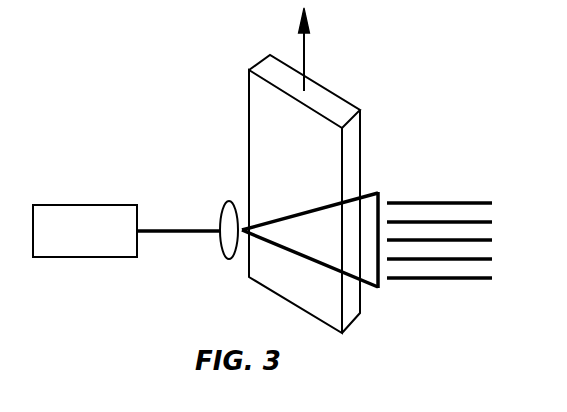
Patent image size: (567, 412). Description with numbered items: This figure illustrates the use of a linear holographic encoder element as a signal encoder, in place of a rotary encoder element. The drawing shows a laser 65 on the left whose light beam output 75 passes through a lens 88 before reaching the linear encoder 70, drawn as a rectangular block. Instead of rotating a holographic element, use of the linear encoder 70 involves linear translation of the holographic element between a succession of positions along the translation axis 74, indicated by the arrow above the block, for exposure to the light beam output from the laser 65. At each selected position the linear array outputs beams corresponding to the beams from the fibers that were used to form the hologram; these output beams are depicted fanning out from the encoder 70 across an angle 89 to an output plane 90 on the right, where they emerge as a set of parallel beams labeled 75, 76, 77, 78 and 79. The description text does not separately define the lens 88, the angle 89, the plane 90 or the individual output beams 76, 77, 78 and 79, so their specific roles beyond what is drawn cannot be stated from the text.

The laser 65 is at (117, 205).
The linear encoder 70 is at (249, 108).
The translation axis 74 is at (302, 52).
The laser beam 75 is at (148, 229).
The deflected beam 76 is at (462, 222).
The deflected beam 77 is at (470, 242).
The deflected beam 78 is at (442, 261).
The deflected beam 79 is at (397, 280).
The lens 88 is at (228, 260).
The scan angle 89 is at (295, 220).
The scan plane 90 is at (380, 211).